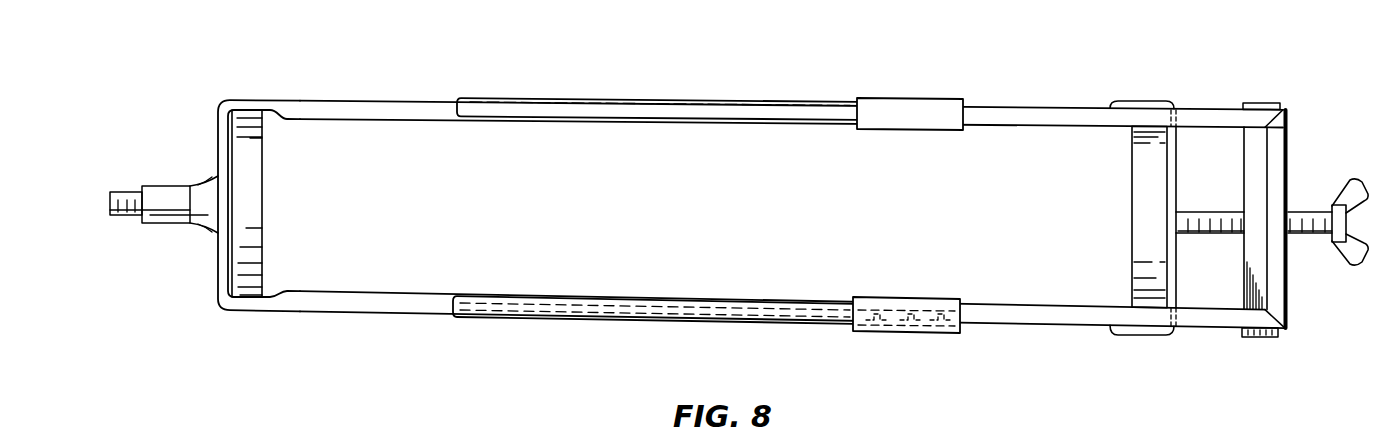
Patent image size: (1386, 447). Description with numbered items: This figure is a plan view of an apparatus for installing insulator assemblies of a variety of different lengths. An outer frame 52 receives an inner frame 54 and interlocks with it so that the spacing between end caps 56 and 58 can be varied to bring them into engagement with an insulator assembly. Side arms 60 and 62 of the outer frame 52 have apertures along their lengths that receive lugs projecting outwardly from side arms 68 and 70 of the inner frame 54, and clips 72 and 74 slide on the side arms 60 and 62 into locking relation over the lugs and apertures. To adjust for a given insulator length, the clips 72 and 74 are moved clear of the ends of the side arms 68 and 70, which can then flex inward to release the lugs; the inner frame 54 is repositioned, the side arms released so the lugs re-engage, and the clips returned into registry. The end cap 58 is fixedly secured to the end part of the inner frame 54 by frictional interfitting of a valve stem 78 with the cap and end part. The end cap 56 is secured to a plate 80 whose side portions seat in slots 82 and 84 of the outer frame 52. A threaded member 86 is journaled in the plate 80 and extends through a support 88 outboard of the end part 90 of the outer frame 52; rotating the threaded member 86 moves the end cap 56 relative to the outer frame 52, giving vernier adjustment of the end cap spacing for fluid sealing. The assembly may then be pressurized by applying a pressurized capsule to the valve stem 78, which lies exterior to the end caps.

The outer frame 52 is at (1236, 84).
The inner frame 54 is at (262, 88).
The end cap 56 is at (1132, 156).
The end cap 58 is at (262, 168).
The side arm 60 is at (612, 321).
The side arm 62 is at (713, 99).
The side arm 68 is at (372, 313).
The side arm 70 is at (381, 98).
The clip 72 is at (903, 298).
The clip 74 is at (907, 98).
The valve stem 78 is at (165, 186).
The plate 80 is at (1177, 138).
The slot 82 is at (1145, 335).
The slot 84 is at (1138, 101).
The threaded member 86 is at (1319, 237).
The support 88 is at (1257, 170).
The end part 90 is at (1288, 310).